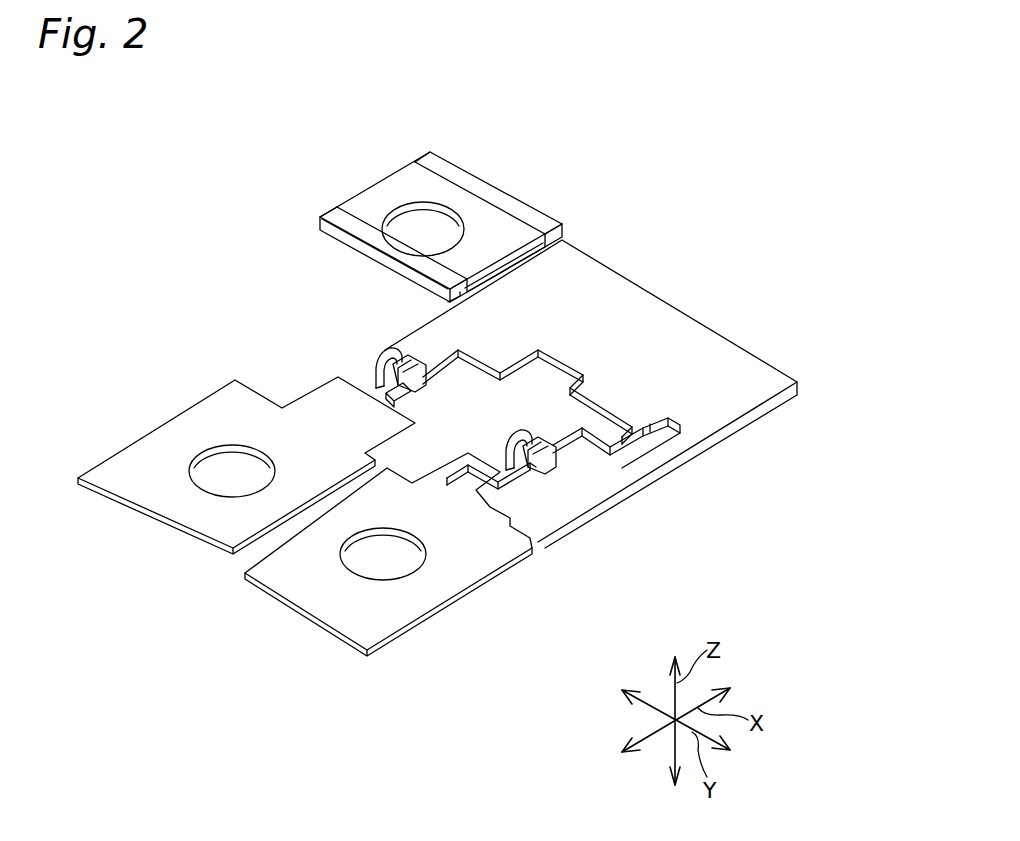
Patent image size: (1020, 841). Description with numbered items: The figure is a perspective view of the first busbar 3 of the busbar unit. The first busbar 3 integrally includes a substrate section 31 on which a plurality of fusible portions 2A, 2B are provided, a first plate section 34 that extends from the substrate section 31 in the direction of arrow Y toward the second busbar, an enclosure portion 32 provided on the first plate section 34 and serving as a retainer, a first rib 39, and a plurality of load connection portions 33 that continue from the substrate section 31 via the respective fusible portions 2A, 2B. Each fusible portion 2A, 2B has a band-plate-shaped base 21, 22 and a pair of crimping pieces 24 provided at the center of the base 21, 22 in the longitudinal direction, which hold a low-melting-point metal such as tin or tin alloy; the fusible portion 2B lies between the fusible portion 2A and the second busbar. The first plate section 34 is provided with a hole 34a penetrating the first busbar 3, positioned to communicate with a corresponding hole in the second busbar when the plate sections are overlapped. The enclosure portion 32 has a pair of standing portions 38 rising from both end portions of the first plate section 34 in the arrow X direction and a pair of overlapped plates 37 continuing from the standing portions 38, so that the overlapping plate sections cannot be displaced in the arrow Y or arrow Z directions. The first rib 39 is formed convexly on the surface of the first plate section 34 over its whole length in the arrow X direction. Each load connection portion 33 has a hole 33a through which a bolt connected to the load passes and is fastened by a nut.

The first busbar 3 is at (702, 210).
The substrate section 31 is at (626, 309).
The enclosure portion 32 is at (453, 193).
The load connection portion 33 is at (305, 532).
The hole 33a is at (220, 488).
The first plate section 34 is at (447, 202).
The hole 34a is at (457, 220).
The overlapped plate 37 is at (433, 160).
The standing portion 38 is at (560, 234).
The first rib 39 is at (509, 238).
The base 21 is at (518, 470).
The base 22 is at (400, 404).
The crimping pieces 24 is at (393, 367).
The fusible portion 2A is at (541, 435).
The fusible portion 2B is at (378, 352).